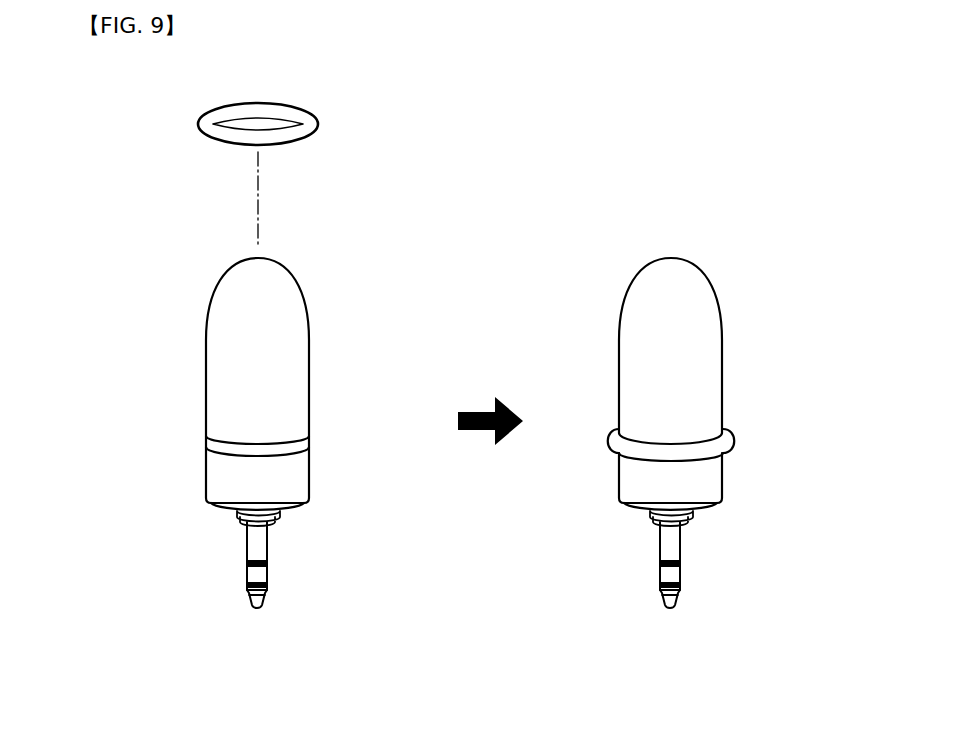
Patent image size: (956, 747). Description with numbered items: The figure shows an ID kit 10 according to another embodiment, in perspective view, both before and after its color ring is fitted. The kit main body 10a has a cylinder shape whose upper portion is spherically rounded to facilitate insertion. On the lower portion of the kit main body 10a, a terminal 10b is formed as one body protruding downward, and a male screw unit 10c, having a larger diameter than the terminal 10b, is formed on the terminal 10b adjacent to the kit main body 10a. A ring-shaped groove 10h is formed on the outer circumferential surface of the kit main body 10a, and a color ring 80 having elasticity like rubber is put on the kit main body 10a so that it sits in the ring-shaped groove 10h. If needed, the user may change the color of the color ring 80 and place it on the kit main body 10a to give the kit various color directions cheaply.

The ID kit 10 is at (461, 433).
The kit main body 10a is at (305, 373).
The terminal 10b is at (253, 541).
The male screw unit 10c is at (240, 515).
The ring-shaped groove 10h is at (309, 441).
The color ring 80 is at (318, 123).